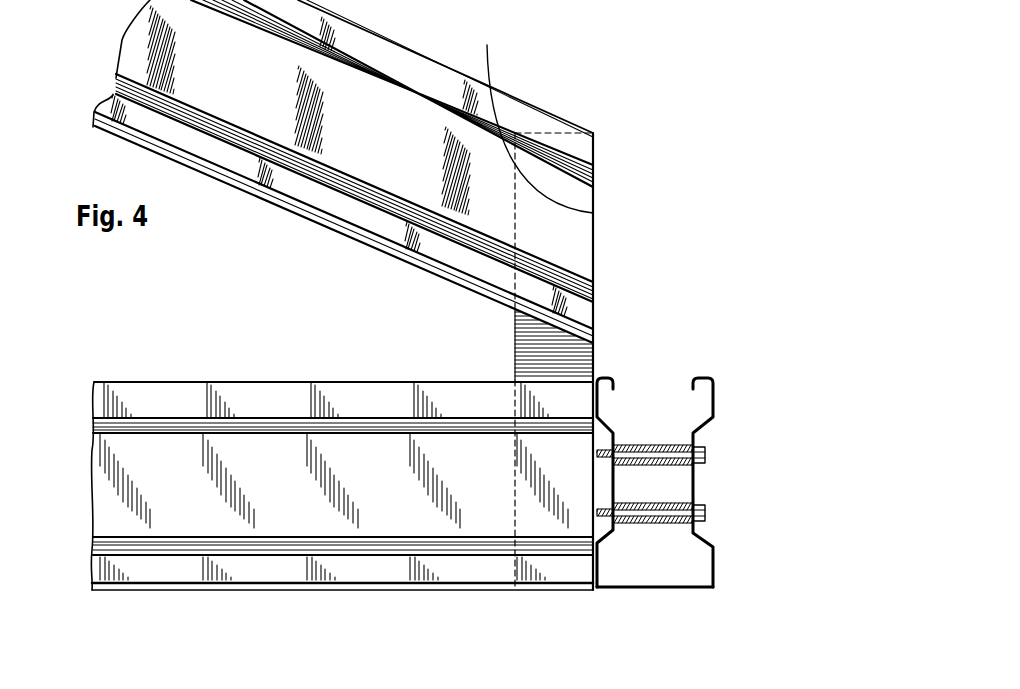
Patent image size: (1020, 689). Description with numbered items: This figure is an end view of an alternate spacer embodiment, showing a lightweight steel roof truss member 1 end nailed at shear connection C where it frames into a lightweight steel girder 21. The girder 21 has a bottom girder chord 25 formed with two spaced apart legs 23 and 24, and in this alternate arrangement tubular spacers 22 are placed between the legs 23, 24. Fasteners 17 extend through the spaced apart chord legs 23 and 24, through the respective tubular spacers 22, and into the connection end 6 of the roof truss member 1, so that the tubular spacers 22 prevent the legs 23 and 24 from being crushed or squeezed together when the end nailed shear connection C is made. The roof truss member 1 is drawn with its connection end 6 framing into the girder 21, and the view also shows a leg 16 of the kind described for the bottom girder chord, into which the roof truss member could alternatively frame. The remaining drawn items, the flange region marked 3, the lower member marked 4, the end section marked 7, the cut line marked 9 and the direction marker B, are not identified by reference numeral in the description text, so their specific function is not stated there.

The roof truss member 1 is at (552, 93).
The flange of upper beam 3 is at (374, 42).
The second structural member (lower beam) 4 is at (170, 573).
The connection end 6 is at (593, 482).
The end section 7 is at (528, 347).
The cut line 9 is at (537, 117).
The leg 16 is at (597, 317).
The fasteners 17 is at (705, 453).
The lightweight steel girder 21 is at (707, 463).
The tubular spacers 22 is at (653, 447).
The leg 23 is at (610, 420).
The leg 24 is at (713, 402).
The bottom girder chord 25 is at (667, 587).
The direction B is at (802, 0).
The shear connection C is at (730, 560).